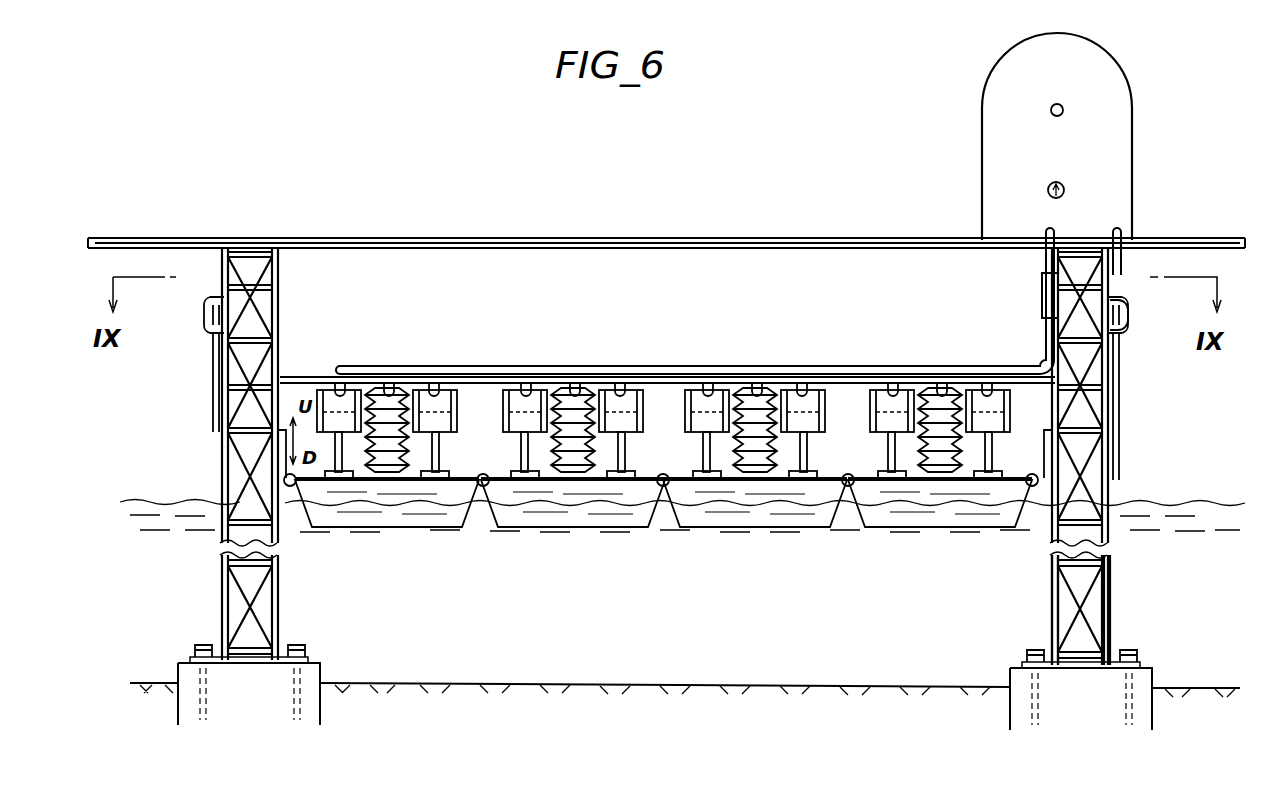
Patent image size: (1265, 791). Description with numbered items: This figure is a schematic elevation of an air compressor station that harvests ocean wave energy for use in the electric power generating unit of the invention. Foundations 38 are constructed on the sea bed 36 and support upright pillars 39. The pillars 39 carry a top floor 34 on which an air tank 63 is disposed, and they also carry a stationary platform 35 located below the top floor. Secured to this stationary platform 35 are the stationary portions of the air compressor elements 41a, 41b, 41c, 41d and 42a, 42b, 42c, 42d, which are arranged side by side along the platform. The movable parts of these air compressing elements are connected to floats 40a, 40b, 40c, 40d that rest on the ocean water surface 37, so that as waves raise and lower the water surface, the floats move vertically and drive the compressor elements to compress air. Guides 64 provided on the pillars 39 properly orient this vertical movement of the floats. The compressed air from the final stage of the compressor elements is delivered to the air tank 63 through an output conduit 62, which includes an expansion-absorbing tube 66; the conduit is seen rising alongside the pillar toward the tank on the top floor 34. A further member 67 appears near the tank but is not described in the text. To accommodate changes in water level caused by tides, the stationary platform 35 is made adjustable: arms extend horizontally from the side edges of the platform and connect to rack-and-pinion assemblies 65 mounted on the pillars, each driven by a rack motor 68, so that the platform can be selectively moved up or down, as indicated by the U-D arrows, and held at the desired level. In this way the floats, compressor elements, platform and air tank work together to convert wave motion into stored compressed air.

The top floor 34 is at (272, 240).
The stationary platform 35 is at (328, 380).
The sea bed 36 is at (477, 678).
The ocean water surface 37 is at (182, 512).
The foundation 38 is at (1013, 690).
The pillar 39 is at (1112, 615).
The float 40a is at (410, 492).
The float 40b is at (590, 492).
The float 40c is at (783, 492).
The float 40d is at (965, 492).
The air compressor element 41a is at (460, 400).
The air compressor element 41b is at (645, 400).
The air compressor element 41c is at (825, 400).
The air compressor element 41d is at (1010, 392).
The air compressor element 42a is at (400, 395).
The air compressor element 42b is at (585, 395).
The air compressor element 42c is at (760, 395).
The air compressor element 42d is at (960, 392).
The output conduit 62 is at (1043, 330).
The air tank 63 is at (1118, 188).
The guide 64 is at (280, 437).
The rack-and-pinion assembly 65 is at (214, 378).
The expansion-absorbing tube 66 is at (1042, 282).
The rod 67 is at (1122, 252).
The rack motor 68 is at (1120, 322).